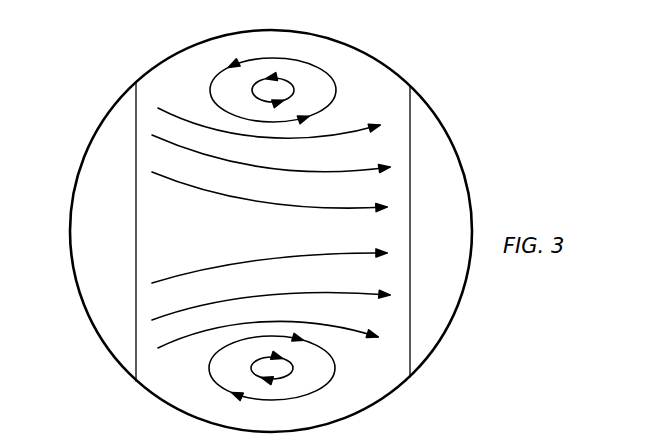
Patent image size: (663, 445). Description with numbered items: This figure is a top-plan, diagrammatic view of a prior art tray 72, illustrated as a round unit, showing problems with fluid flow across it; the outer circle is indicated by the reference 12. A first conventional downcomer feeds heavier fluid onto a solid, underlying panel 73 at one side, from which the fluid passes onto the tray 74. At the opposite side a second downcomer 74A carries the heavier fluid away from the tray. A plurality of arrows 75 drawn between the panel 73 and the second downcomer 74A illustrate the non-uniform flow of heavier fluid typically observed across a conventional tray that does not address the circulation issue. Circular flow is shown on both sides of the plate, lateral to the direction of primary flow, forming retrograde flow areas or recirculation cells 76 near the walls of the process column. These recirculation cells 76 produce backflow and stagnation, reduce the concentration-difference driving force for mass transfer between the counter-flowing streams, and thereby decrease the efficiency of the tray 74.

The vessel / tank wall 12 is at (450, 138).
The prior art tray 72 is at (362, 66).
The solid underlying panel 73 is at (103, 290).
The tray 74 is at (184, 240).
The second downcomer 74A is at (442, 292).
The arrows 75 is at (160, 140).
The recirculation cells 76 is at (252, 98).